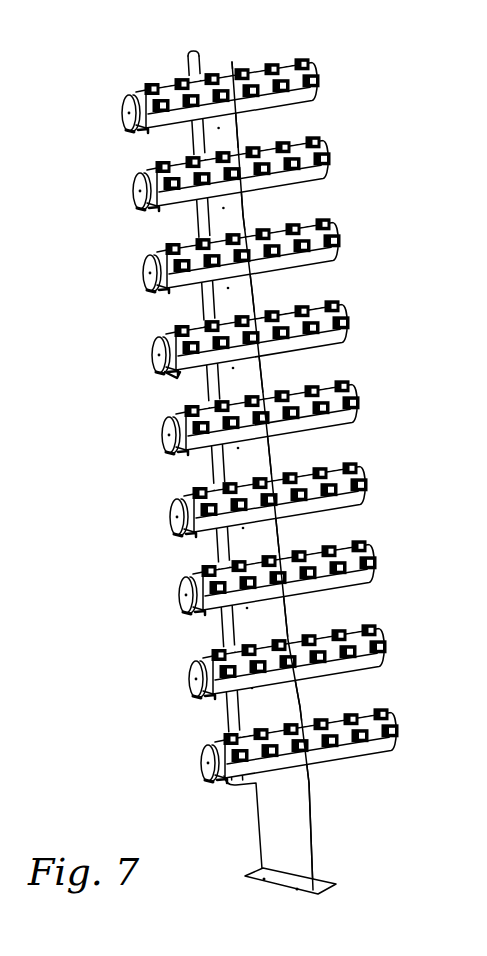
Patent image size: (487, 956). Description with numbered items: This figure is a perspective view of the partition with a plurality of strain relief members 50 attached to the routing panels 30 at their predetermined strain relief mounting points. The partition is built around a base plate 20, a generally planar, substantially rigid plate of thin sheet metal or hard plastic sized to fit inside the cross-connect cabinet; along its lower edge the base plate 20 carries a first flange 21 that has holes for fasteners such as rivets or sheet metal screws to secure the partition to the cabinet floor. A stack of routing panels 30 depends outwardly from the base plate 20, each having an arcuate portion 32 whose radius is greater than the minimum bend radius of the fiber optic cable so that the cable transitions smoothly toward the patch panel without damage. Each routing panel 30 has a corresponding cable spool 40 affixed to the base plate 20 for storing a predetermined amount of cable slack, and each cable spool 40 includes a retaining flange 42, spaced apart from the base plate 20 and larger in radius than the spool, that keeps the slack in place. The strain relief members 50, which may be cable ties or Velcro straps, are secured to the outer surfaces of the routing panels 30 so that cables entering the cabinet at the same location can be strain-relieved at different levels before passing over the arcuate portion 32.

The base plate 20 is at (280, 812).
The first flange 21 is at (272, 887).
The routing panel 30 is at (189, 326).
The arcuate portion 32 is at (188, 374).
The cable spool 40 is at (212, 692).
The retaining flange 42 is at (189, 679).
The strain relief member 50 is at (322, 178).